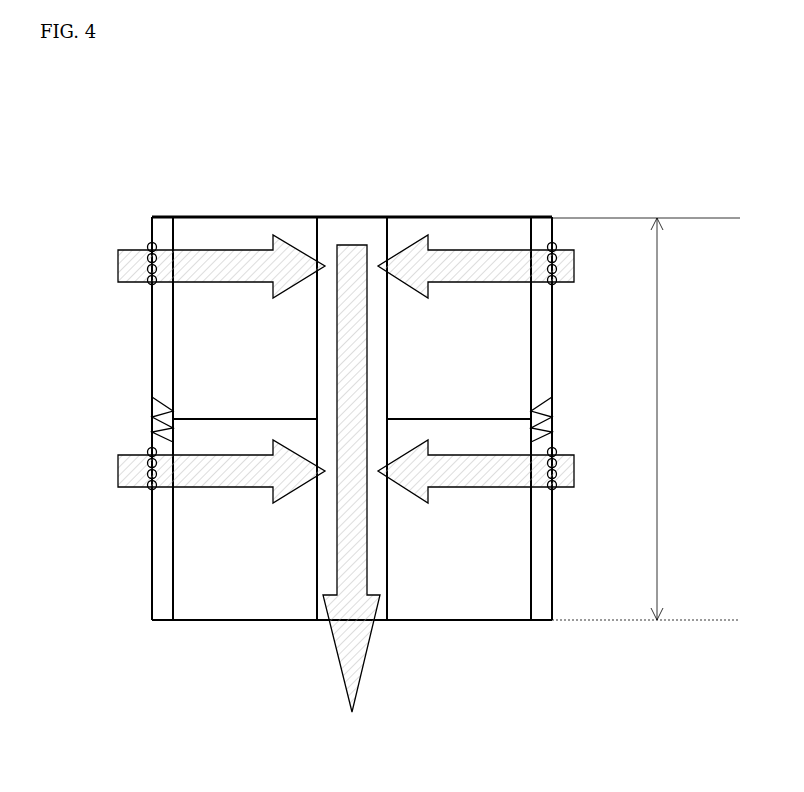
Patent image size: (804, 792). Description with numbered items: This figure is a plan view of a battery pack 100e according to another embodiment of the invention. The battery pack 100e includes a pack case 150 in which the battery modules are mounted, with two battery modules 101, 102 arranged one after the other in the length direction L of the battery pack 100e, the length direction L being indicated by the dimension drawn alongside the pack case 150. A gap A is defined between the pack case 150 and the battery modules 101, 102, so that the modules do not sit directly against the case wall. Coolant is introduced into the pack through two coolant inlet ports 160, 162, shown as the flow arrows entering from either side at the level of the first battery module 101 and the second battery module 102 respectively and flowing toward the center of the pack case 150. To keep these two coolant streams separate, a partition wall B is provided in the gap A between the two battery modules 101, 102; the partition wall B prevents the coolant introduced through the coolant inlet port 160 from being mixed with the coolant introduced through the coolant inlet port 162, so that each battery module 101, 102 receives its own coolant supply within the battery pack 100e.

The battery pack 100e is at (158, 136).
The pack case 150 is at (432, 217).
The coolant inlet port 160 is at (152, 265).
The coolant inlet port 162 is at (152, 470).
The battery module 101 is at (193, 318).
The battery module 102 is at (195, 512).
The gap A is at (160, 580).
The partition wall B is at (140, 424).
The length direction L is at (646, 419).